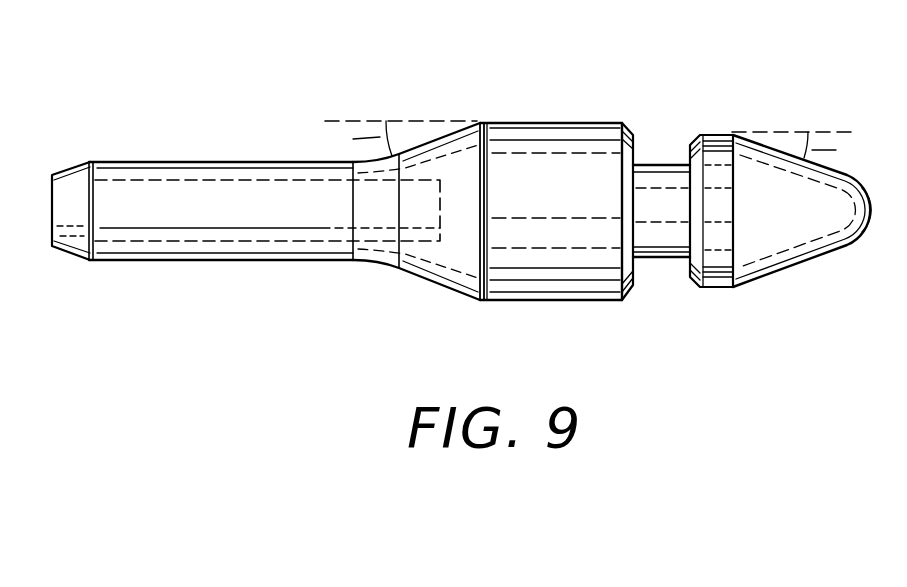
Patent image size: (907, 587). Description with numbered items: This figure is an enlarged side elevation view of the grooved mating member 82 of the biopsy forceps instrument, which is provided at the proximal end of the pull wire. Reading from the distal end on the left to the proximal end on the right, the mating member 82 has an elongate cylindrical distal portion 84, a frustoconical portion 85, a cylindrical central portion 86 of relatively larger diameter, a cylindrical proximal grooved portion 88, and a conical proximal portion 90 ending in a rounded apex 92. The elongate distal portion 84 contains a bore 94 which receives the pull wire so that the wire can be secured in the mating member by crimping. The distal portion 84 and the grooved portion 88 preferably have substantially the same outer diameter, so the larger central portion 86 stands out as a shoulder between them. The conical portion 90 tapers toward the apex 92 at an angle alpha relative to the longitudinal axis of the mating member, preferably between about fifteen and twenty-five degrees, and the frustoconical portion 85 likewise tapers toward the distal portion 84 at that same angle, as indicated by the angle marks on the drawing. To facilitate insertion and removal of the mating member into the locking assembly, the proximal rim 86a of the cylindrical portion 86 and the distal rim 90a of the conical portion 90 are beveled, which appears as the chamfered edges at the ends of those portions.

The mating member 82 is at (485, 122).
The elongate cylindrical distal portion 84 is at (195, 162).
The frustoconical portion 85 is at (433, 283).
The cylindrical central portion 86 is at (522, 302).
The proximal rim 86a is at (627, 122).
The cylindrical proximal grooved portion 88 is at (660, 258).
The conical proximal portion 90 is at (792, 265).
The distal rim 90a is at (692, 135).
The rounded apex 92 is at (871, 212).
The bore 94 is at (70, 212).